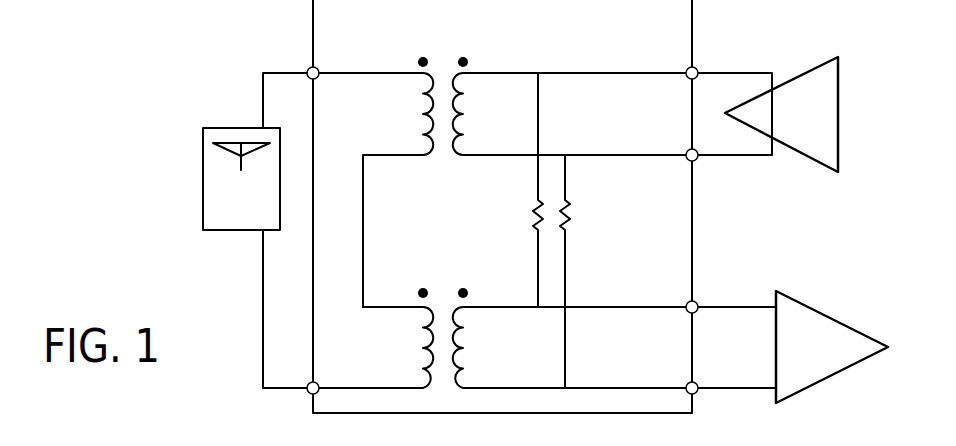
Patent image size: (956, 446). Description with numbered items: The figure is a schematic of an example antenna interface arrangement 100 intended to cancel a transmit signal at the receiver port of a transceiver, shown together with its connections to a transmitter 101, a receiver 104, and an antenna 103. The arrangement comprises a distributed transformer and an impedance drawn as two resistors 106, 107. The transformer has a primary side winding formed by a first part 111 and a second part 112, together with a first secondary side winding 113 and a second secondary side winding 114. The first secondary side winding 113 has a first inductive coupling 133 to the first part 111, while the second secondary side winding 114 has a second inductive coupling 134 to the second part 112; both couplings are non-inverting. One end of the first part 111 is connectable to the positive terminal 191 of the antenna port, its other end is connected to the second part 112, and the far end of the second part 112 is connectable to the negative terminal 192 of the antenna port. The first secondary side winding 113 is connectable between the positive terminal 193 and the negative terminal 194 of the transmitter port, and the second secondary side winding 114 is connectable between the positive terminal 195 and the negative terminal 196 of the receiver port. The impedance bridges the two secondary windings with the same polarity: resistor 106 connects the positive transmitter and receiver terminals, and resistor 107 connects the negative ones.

The antenna interface arrangement 100 is at (502, 206).
The transmitter 101 is at (765, 114).
The antenna 103 is at (258, 230).
The receiver 104 is at (814, 347).
The resistor 106 is at (532, 218).
The resistor 107 is at (567, 221).
The first part of the primary side winding 111 is at (373, 190).
The second part of the primary side winding 112 is at (373, 347).
The first secondary side winding 113 is at (572, 114).
The second secondary side winding 114 is at (614, 347).
The first inductive coupling 133 is at (502, 166).
The second inductive coupling 134 is at (544, 322).
The terminal of the antenna port 191 is at (307, 72).
The terminal of the antenna port 192 is at (306, 387).
The terminal of the transmitter port 193 is at (686, 72).
The terminal of the transmitter port 194 is at (686, 154).
The terminal of the receiver port 195 is at (686, 306).
The terminal of the receiver port 196 is at (686, 387).